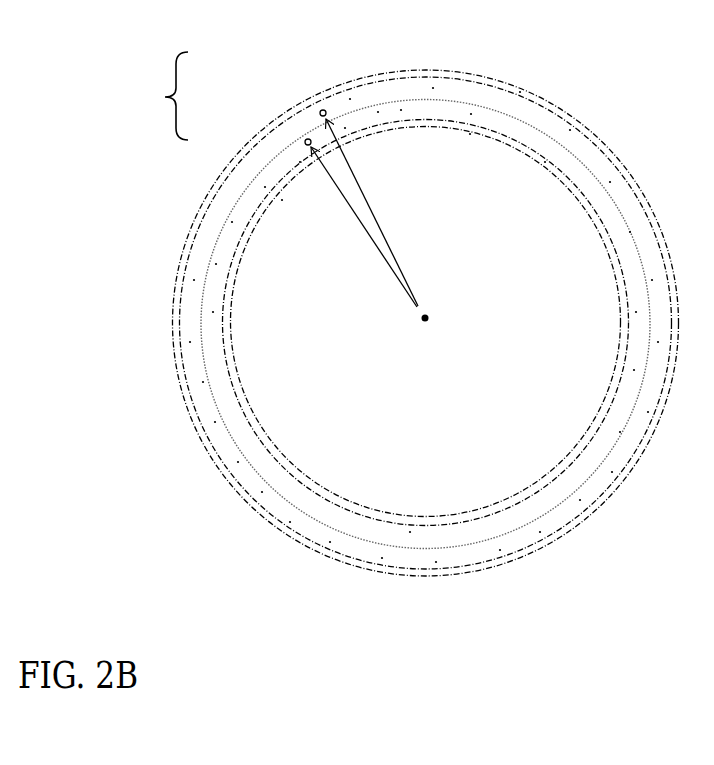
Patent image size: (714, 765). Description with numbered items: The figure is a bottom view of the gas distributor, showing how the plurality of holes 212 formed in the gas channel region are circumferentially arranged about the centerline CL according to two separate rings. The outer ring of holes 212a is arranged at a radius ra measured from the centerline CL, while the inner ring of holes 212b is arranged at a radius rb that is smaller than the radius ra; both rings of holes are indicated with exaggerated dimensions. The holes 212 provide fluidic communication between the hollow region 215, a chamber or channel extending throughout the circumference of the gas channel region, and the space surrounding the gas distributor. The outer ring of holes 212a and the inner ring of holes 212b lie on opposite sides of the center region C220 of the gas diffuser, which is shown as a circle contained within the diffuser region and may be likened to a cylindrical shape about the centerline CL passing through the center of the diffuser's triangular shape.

The plurality of holes 212 is at (152, 96).
The outer ring of holes 212a is at (315, 111).
The inner ring of holes 212b is at (300, 141).
The hollow region 215 is at (227, 442).
The center region C220 is at (215, 233).
The centerline CL is at (442, 304).
The radius ra is at (372, 212).
The radius rb is at (364, 227).